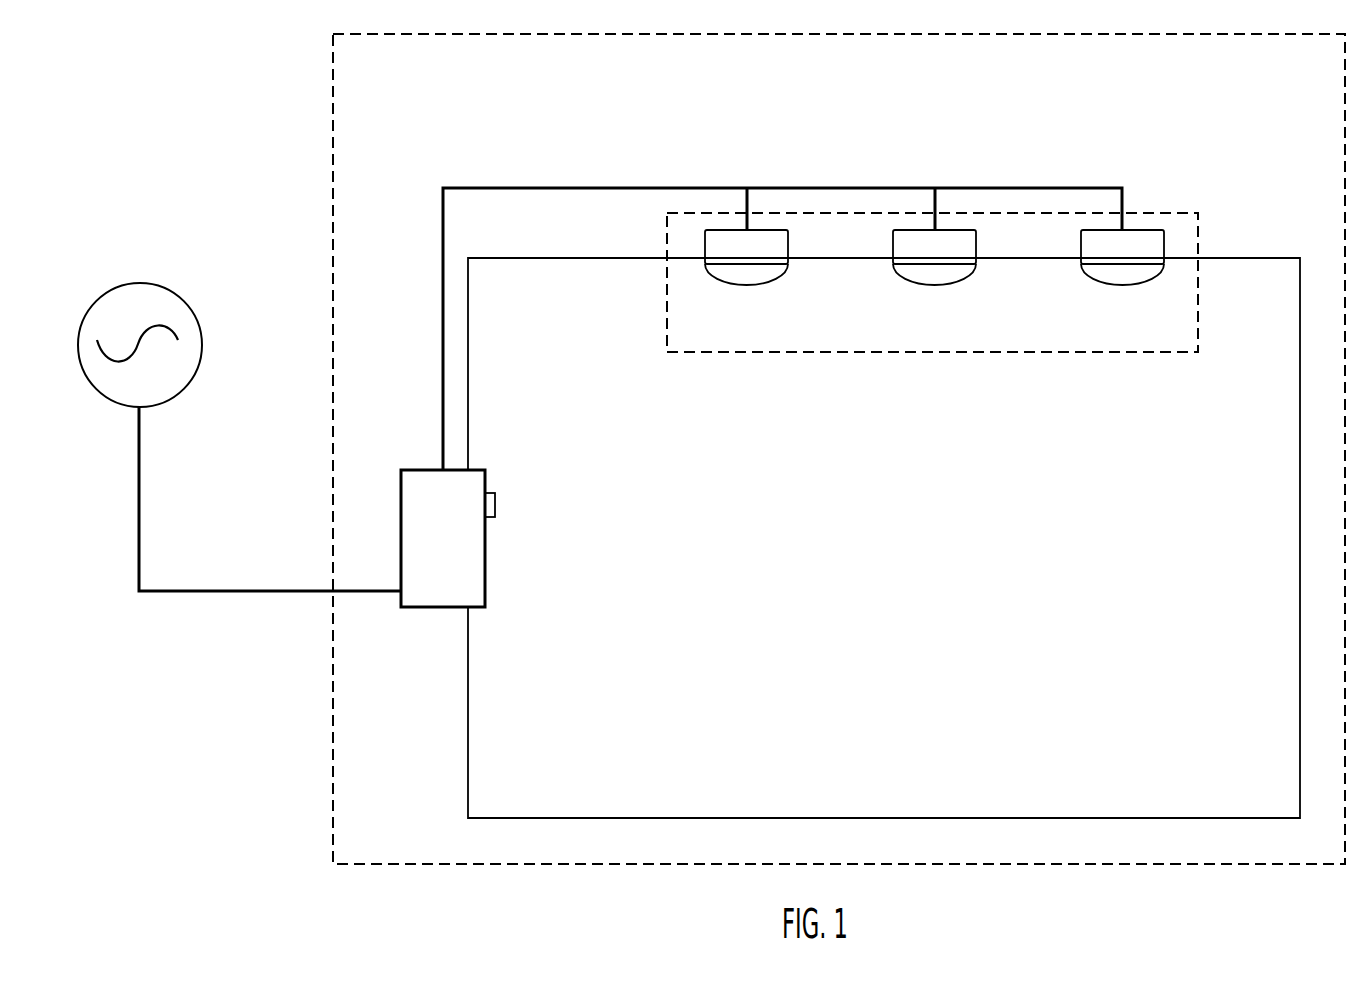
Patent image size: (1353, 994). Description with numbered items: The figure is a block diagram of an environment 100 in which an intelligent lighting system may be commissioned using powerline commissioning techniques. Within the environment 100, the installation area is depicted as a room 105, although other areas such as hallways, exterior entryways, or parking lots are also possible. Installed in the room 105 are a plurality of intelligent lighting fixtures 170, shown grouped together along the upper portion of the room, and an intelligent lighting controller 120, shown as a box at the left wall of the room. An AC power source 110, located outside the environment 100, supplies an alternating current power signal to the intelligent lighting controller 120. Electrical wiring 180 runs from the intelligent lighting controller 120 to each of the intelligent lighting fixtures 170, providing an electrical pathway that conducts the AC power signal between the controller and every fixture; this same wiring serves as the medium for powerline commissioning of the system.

The environment 100 is at (1243, 113).
The room 105 is at (1287, 812).
The AC power source 110 is at (130, 282).
The intelligent lighting controller 120 is at (485, 565).
The intelligent lighting fixtures 170 is at (1100, 347).
The electrical wiring 180 is at (598, 188).